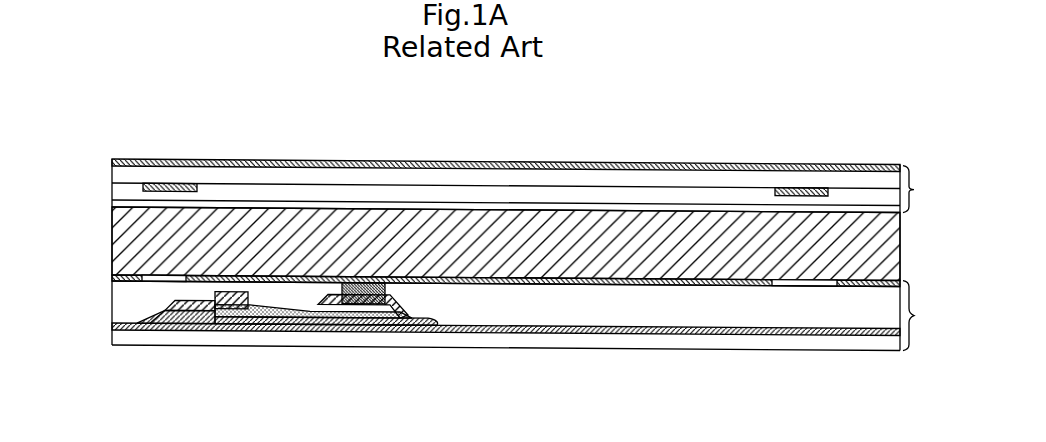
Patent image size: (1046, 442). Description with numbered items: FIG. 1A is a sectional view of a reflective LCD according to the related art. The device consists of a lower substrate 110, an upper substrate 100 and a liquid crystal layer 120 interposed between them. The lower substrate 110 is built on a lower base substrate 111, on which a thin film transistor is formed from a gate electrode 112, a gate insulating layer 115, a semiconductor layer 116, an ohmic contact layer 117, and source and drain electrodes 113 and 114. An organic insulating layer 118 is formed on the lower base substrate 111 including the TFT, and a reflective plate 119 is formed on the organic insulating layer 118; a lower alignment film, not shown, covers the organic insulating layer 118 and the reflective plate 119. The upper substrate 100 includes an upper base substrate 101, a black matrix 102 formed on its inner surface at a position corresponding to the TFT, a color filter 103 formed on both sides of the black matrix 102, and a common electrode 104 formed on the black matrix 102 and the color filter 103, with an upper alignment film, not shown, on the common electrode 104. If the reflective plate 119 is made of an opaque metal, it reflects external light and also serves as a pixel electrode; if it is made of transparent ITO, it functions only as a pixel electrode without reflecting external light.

The upper substrate 100 is at (530, 255).
The upper base substrate 101 is at (830, 163).
The black matrix 102 is at (184, 183).
The color filter 103 is at (628, 187).
The common electrode 104 is at (122, 202).
The lower substrate 110 is at (530, 313).
The lower base substrate 111 is at (792, 343).
The gate electrode 112 is at (265, 331).
The source electrode 113 is at (165, 308).
The drain electrode 114 is at (345, 326).
The gate insulating layer 115 is at (148, 326).
The semiconductor layer 116 is at (215, 330).
The ohmic contact layer 117 is at (434, 326).
The organic insulating layer 118 is at (588, 297).
The reflective plate 119 is at (537, 283).
The liquid crystal layer 120 is at (886, 240).